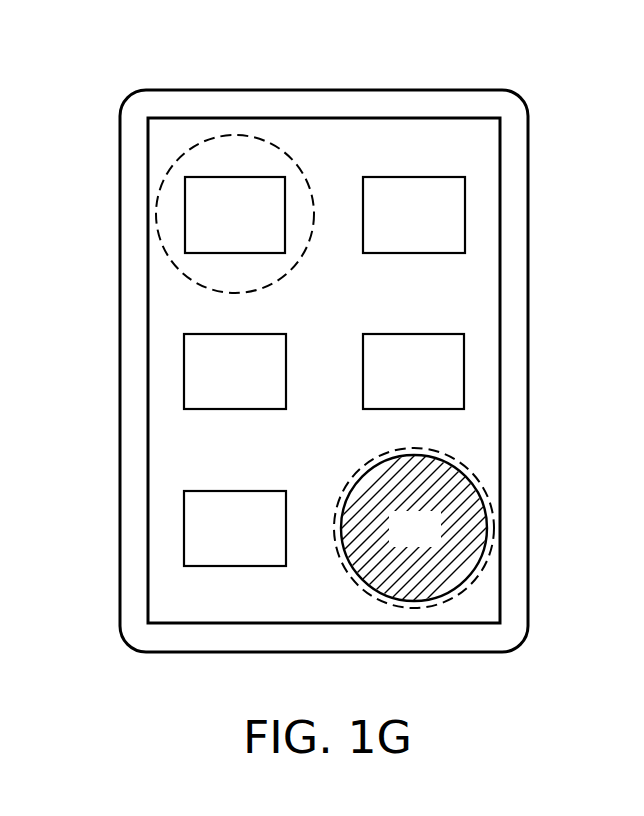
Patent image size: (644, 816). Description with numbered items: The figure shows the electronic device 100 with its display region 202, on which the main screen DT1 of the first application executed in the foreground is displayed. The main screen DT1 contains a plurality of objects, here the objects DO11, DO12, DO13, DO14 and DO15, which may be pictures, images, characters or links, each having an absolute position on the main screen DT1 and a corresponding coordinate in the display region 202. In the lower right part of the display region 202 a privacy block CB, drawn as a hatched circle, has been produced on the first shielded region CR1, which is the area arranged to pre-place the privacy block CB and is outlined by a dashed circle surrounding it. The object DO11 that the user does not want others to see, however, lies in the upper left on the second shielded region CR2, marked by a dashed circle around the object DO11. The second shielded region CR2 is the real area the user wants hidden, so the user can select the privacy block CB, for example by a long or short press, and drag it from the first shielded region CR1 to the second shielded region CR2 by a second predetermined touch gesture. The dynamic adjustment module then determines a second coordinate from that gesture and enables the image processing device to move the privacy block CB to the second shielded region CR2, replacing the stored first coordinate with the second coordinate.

The electronic device 100 is at (323, 90).
The display region 202 is at (500, 219).
The main screen DT1 is at (326, 370).
The second shielded region CR2 is at (192, 150).
The first shielded region CR1 is at (470, 467).
The object DO11 is at (235, 215).
The object DO12 is at (414, 215).
The object DO13 is at (235, 371).
The object DO14 is at (413, 371).
The object DO15 is at (235, 528).
The privacy block CB is at (420, 522).